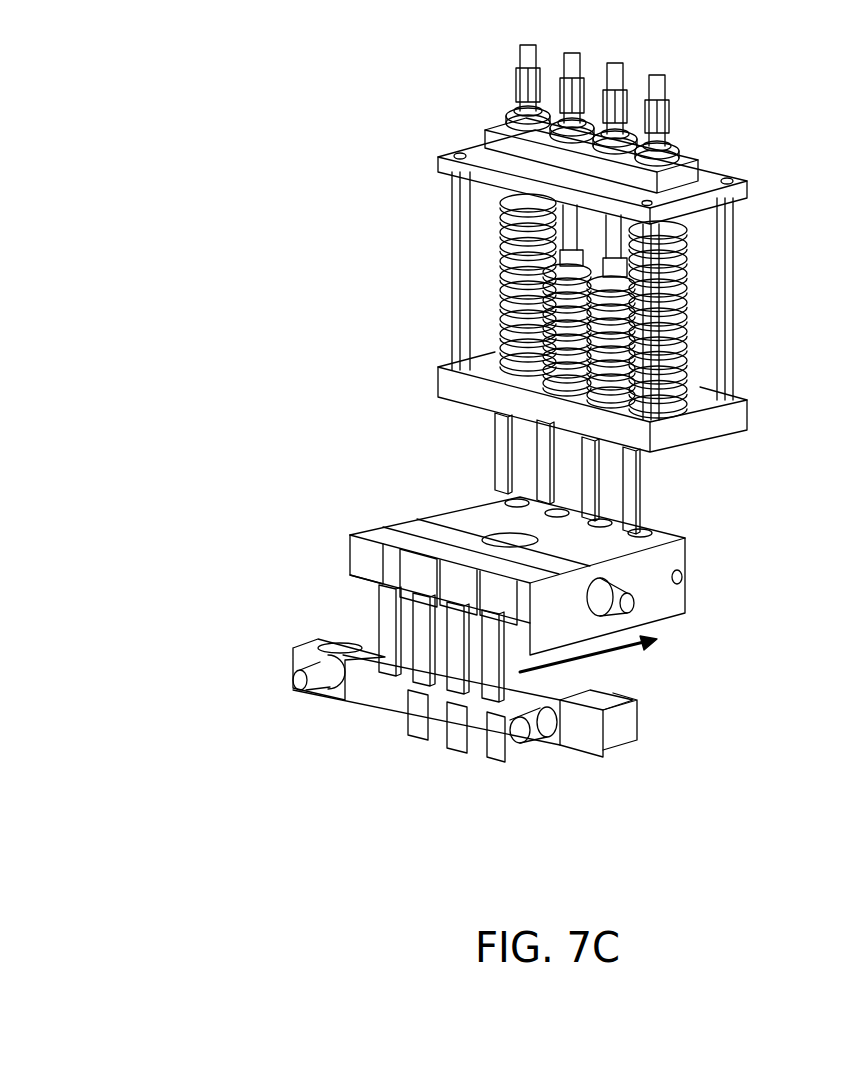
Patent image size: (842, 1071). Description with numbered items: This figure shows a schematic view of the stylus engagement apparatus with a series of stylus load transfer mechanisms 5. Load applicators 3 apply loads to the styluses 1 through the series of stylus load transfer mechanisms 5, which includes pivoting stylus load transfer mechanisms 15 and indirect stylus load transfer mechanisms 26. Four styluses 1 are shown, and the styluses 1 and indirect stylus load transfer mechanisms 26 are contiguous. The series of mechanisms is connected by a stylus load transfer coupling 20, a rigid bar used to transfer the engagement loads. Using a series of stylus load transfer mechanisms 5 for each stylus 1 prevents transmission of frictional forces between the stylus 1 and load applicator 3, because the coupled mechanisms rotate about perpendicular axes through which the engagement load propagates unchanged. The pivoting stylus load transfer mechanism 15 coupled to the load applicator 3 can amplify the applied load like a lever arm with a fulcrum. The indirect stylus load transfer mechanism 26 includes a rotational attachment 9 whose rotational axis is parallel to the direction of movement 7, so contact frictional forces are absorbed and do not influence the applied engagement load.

The stylus 1 is at (480, 690).
The load applicator 3 is at (755, 99).
The series of stylus load transfer mechanisms 5 is at (189, 466).
The direction of movement 7 is at (588, 660).
The rotational attachment 9 is at (300, 682).
The pivoting stylus load transfer mechanism 15 is at (435, 523).
The stylus load transfer coupling 20 is at (484, 674).
The indirect stylus load transfer mechanism 26 is at (333, 637).